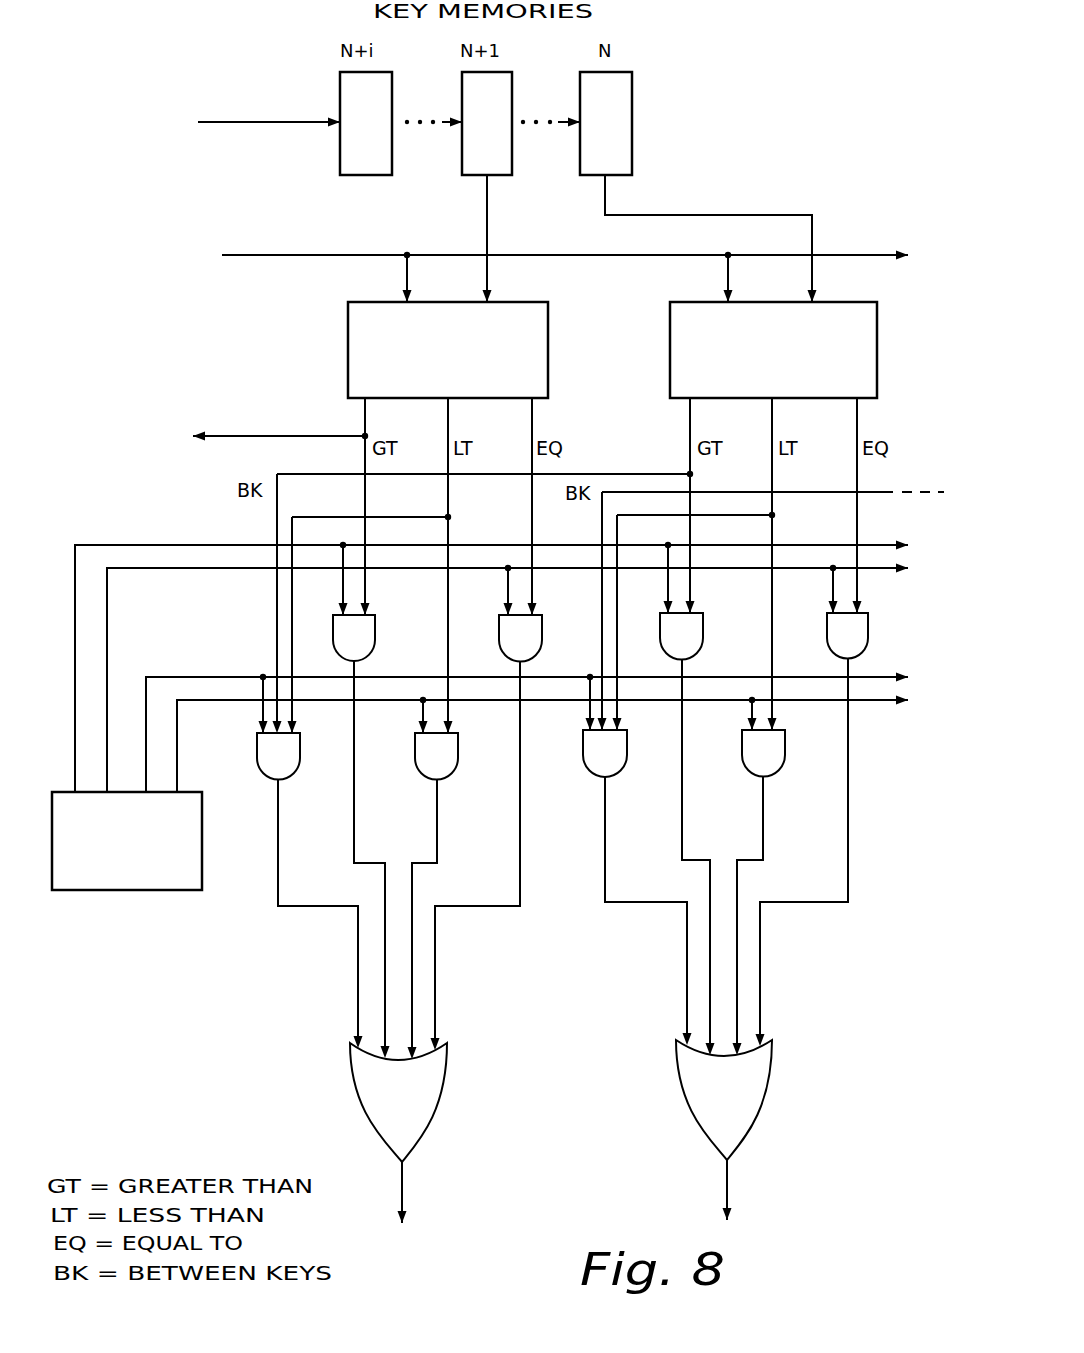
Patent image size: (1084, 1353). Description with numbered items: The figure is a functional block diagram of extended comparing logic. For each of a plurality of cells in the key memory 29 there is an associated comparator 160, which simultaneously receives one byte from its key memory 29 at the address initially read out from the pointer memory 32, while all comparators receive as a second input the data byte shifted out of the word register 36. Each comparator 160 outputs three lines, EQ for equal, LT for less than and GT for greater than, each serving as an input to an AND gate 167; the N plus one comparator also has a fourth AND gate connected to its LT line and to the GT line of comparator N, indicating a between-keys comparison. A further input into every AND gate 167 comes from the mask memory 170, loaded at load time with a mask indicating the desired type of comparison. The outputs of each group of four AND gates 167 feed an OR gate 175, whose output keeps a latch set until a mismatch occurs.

The key memory 29 is at (338, 152).
The pointer memory 32 is at (235, 122).
The word register 36 is at (300, 253).
The comparator 160 is at (348, 330).
The AND gate 167 is at (703, 640).
The mask memory 170 is at (120, 890).
The OR gate 175 is at (436, 1125).